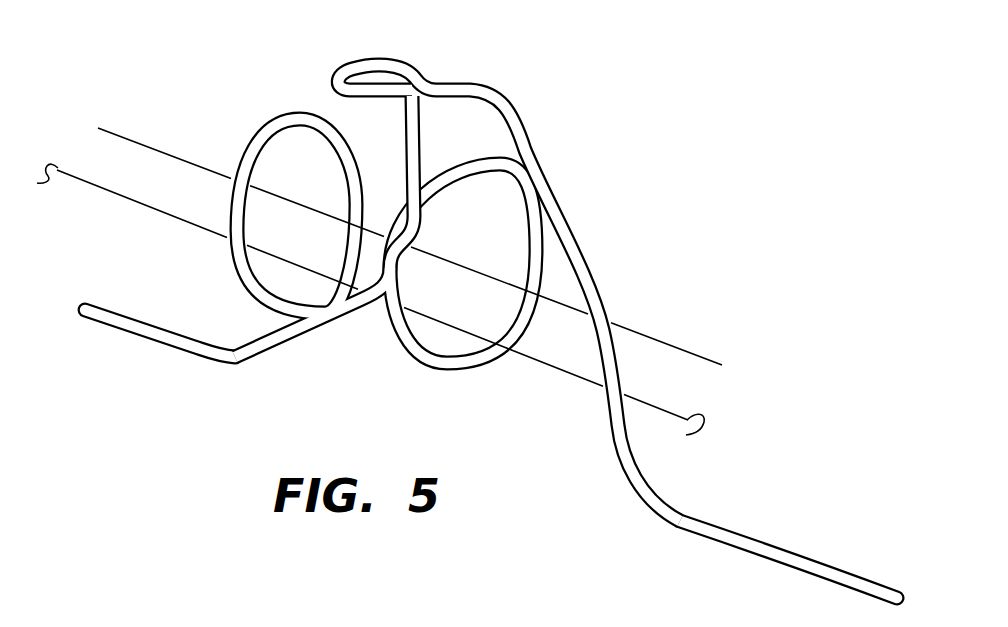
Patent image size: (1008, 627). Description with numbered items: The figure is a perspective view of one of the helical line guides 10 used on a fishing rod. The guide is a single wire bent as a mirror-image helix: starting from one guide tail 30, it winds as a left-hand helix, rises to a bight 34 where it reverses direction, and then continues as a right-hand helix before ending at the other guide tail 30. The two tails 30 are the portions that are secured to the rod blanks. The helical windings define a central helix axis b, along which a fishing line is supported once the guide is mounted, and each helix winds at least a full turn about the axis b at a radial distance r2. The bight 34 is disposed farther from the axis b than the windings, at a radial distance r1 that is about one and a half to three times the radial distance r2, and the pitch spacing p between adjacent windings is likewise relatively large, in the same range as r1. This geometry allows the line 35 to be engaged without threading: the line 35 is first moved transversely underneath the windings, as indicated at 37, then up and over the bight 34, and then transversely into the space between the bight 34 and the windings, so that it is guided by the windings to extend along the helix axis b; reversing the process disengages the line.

The helical line guide 10 is at (491, 310).
The guide tail 30 is at (140, 326).
The bight 34 is at (350, 86).
The line 35 is at (668, 411).
The line position beneath windings 37 is at (532, 368).
The pitch spacing p is at (387, 257).
The radial distance of bight r1 is at (424, 247).
The radial distance of helical windings r2 is at (468, 178).
The central helix axis b is at (672, 343).